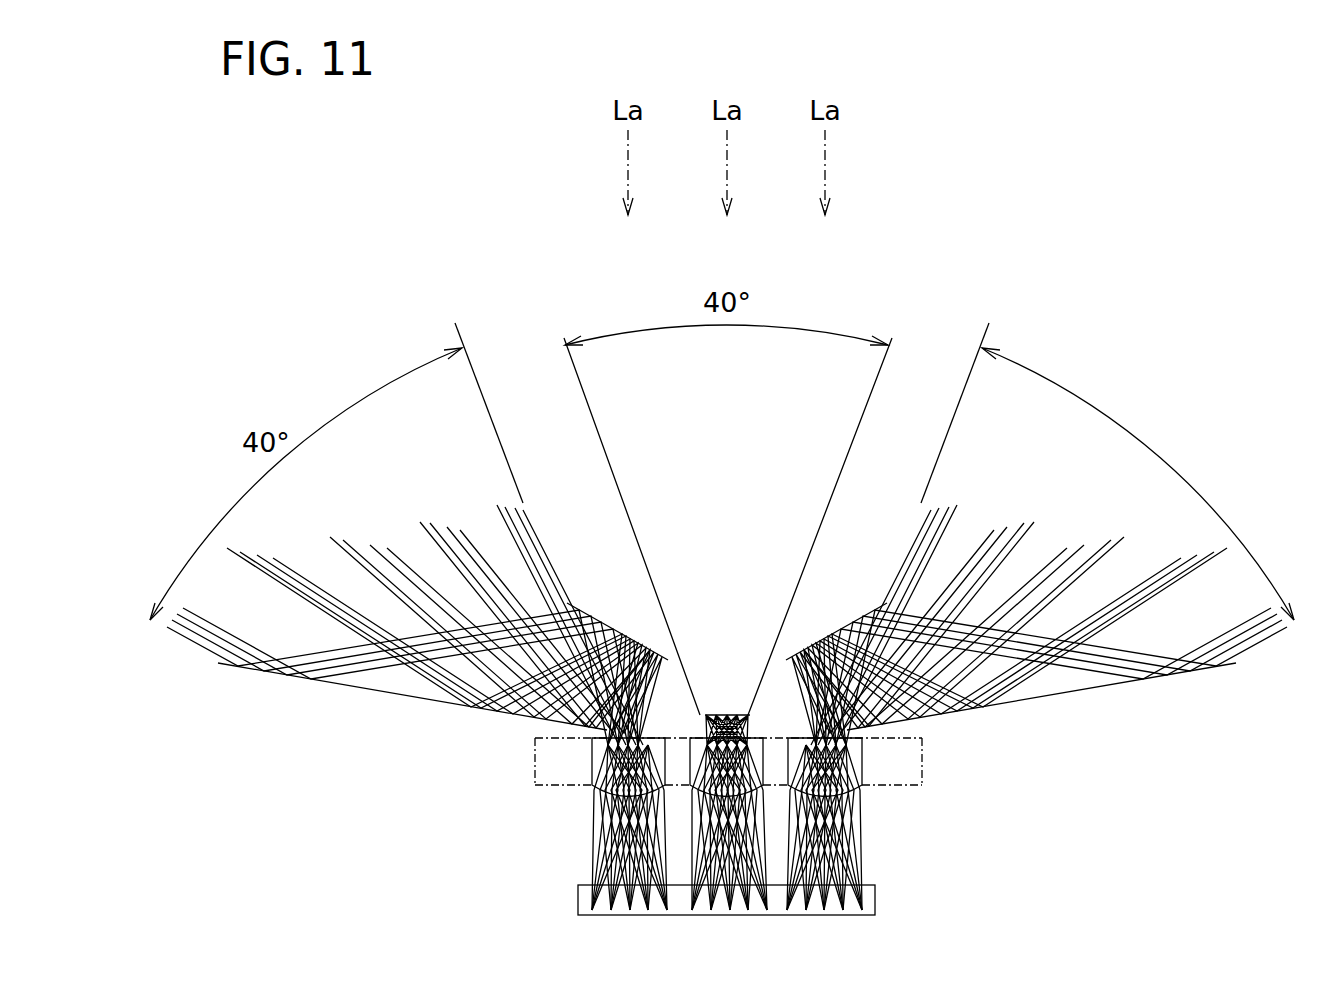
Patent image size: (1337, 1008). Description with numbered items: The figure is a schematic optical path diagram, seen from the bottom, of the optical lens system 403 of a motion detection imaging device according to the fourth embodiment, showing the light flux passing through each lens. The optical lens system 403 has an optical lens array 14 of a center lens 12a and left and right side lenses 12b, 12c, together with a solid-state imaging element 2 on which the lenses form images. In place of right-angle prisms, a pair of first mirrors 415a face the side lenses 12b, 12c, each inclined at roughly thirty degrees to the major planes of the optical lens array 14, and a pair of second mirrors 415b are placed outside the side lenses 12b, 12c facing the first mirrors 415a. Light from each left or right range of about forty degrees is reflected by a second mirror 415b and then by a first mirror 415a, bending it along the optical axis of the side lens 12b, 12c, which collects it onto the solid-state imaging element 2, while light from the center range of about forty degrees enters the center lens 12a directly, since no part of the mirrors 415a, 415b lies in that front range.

The solid-state imaging element 2 is at (875, 900).
The optical lens array 14 is at (535, 762).
The center lens 12a is at (700, 752).
The left side lens 12b is at (597, 782).
The right side lens 12c is at (857, 782).
The first mirror 415a is at (612, 640).
The second mirror 415b is at (345, 690).
The optical lens system 403 is at (1112, 339).